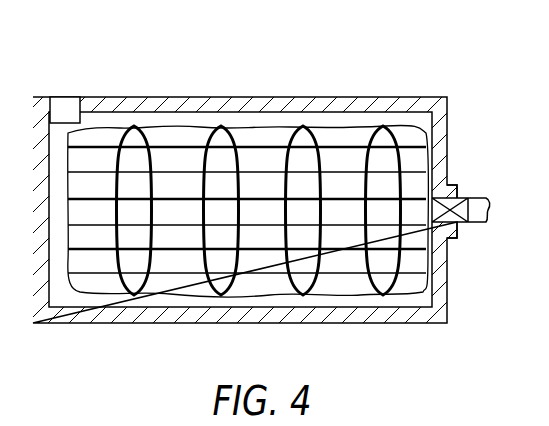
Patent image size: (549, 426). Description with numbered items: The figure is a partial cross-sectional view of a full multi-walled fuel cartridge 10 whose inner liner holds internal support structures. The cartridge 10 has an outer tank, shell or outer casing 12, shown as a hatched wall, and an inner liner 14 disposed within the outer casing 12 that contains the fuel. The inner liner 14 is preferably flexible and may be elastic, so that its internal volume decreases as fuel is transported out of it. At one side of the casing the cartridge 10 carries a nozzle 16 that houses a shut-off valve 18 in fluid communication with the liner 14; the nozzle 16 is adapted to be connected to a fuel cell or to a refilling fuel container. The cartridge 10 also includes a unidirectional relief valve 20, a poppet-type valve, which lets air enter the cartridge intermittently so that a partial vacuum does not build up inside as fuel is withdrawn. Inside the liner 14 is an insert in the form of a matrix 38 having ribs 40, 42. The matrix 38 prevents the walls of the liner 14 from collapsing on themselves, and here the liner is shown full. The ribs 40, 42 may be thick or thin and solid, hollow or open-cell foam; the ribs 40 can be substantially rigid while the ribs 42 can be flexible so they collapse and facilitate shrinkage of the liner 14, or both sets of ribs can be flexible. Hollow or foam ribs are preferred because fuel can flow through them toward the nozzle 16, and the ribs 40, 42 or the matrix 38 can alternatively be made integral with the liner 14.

The cartridge 10 is at (274, 192).
The outer casing 12 is at (115, 105).
The inner liner 14 is at (273, 127).
The nozzle 16 is at (458, 190).
The shut-off valve 18 is at (460, 224).
The unidirectional relief valve 20 is at (62, 105).
The matrix 38 is at (335, 157).
The ribs 40 is at (120, 262).
The ribs 42 is at (182, 274).